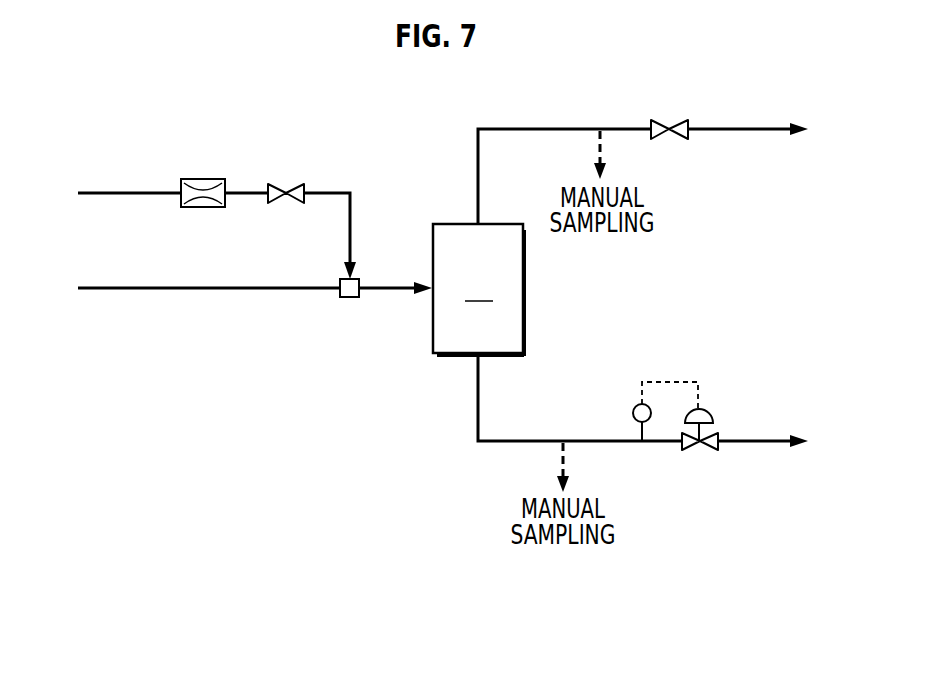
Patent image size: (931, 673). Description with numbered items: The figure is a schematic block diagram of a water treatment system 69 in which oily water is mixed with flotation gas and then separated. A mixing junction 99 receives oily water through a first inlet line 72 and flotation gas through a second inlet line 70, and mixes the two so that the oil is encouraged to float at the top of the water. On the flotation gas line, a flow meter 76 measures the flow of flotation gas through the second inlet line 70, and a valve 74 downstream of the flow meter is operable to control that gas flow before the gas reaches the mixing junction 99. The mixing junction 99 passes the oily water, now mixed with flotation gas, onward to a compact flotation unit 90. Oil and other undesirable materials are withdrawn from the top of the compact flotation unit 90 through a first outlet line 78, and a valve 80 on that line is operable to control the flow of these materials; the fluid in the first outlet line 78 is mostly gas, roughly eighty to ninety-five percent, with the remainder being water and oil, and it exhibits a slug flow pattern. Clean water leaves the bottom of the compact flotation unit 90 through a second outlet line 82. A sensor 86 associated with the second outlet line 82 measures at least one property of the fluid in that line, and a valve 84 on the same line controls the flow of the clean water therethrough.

The water treatment system 69 is at (361, 108).
The second inlet line 70 is at (130, 193).
The first inlet line 72 is at (145, 290).
The valve 74 is at (296, 193).
The flow meter 76 is at (200, 178).
The first outlet line 78 is at (722, 129).
The valve 80 is at (680, 129).
The second outlet line 82 is at (743, 441).
The valve 84 is at (688, 444).
The sensor 86 is at (634, 408).
The compact flotation unit 90 is at (478, 290).
The mixing junction 99 is at (350, 297).